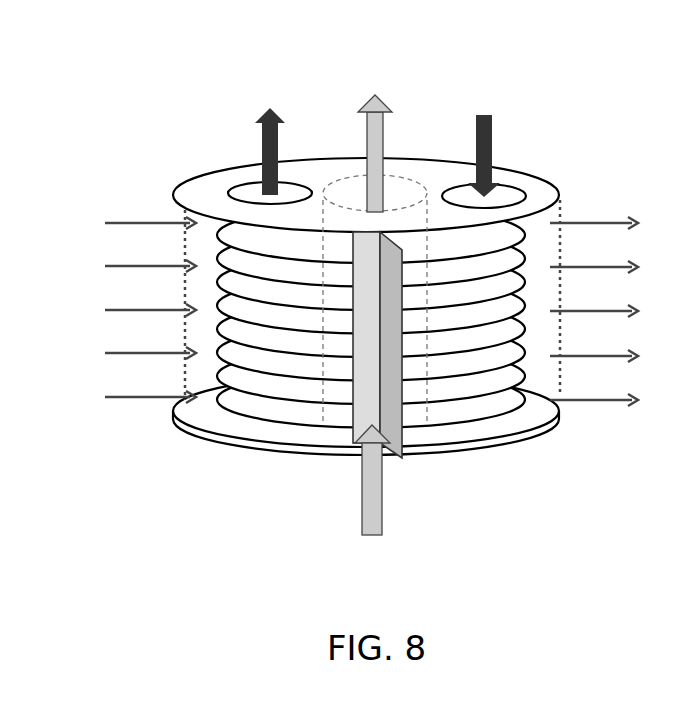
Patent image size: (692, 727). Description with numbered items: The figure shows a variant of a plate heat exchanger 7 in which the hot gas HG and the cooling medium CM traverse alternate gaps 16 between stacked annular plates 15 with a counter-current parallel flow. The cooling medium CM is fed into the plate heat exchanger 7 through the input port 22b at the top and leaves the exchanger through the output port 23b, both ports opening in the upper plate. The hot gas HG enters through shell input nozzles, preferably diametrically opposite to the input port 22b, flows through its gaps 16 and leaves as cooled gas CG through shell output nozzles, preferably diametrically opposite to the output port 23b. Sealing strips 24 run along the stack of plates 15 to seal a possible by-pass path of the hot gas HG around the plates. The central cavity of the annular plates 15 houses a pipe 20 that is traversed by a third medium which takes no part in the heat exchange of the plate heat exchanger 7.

The plate heat exchanger 7 is at (369, 286).
The plates 15 is at (494, 412).
The gaps 16 is at (452, 410).
The pipe 20 is at (402, 192).
The input port 22b is at (524, 189).
The output port 23b is at (232, 192).
The sealing strips 24 is at (372, 366).